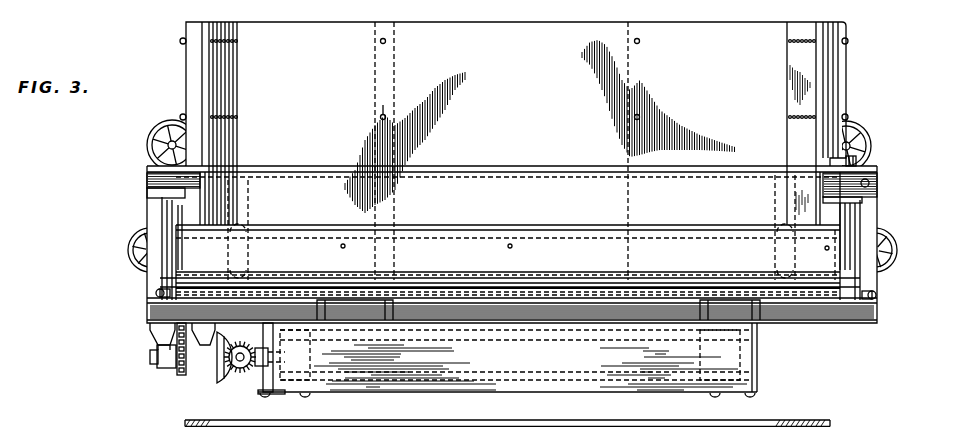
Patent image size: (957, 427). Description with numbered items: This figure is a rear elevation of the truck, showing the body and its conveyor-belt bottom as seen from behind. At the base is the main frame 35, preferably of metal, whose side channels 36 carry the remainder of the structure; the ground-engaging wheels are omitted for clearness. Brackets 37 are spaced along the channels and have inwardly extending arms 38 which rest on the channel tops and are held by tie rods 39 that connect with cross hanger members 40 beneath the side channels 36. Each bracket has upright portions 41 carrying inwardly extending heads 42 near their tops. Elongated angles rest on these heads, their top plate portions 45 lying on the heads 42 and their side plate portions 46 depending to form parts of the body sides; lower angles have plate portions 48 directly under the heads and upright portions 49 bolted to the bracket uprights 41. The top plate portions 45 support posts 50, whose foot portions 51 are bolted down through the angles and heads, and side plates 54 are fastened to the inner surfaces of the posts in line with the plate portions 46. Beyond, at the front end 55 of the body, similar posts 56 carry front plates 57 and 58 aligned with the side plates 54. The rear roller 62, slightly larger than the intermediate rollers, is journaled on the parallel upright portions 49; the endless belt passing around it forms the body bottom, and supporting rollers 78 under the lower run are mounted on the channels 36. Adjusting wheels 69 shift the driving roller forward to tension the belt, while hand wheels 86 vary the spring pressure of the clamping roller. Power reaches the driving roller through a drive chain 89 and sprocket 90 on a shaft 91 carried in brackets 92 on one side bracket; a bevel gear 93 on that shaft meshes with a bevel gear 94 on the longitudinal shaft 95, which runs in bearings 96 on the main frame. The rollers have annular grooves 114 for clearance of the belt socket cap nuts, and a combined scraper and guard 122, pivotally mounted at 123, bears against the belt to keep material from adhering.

The main frame 35 is at (440, 380).
The side channels 36 is at (740, 365).
The brackets 37 is at (162, 308).
The inwardly extending arms 38 is at (800, 315).
The tie rods 39 is at (757, 385).
The cross hanger members 40 is at (750, 398).
The upright portions 41 is at (150, 212).
The heads 42 is at (172, 183).
The top plate portions 45 is at (160, 166).
The side plate portions 46 is at (205, 212).
The plate portions 48 is at (172, 193).
The upright portions 49 is at (168, 260).
The posts 50 is at (188, 93).
The foot portions 51 is at (857, 162).
The side plates 54 is at (215, 75).
The front end 55 is at (602, 420).
The posts 56 is at (395, 63).
The front plate 57 is at (540, 126).
The front plate 58 is at (508, 236).
The rear roller 62 is at (205, 278).
The adjusting wheels 69 is at (137, 240).
The supporting rollers 78 is at (505, 308).
The hand wheels 86 is at (178, 125).
The drive chain 89 is at (166, 338).
The sprocket 90 is at (181, 375).
The shaft 91 is at (157, 354).
The brackets 92 is at (168, 371).
The bevel gear 93 is at (222, 375).
The bevel gear 94 is at (240, 370).
The shaft 95 is at (257, 334).
The bearings 96 is at (275, 393).
The annular grooves 114 is at (250, 262).
The combined scraper and guard 122 is at (508, 252).
The pivotal mounting 123 is at (156, 293).